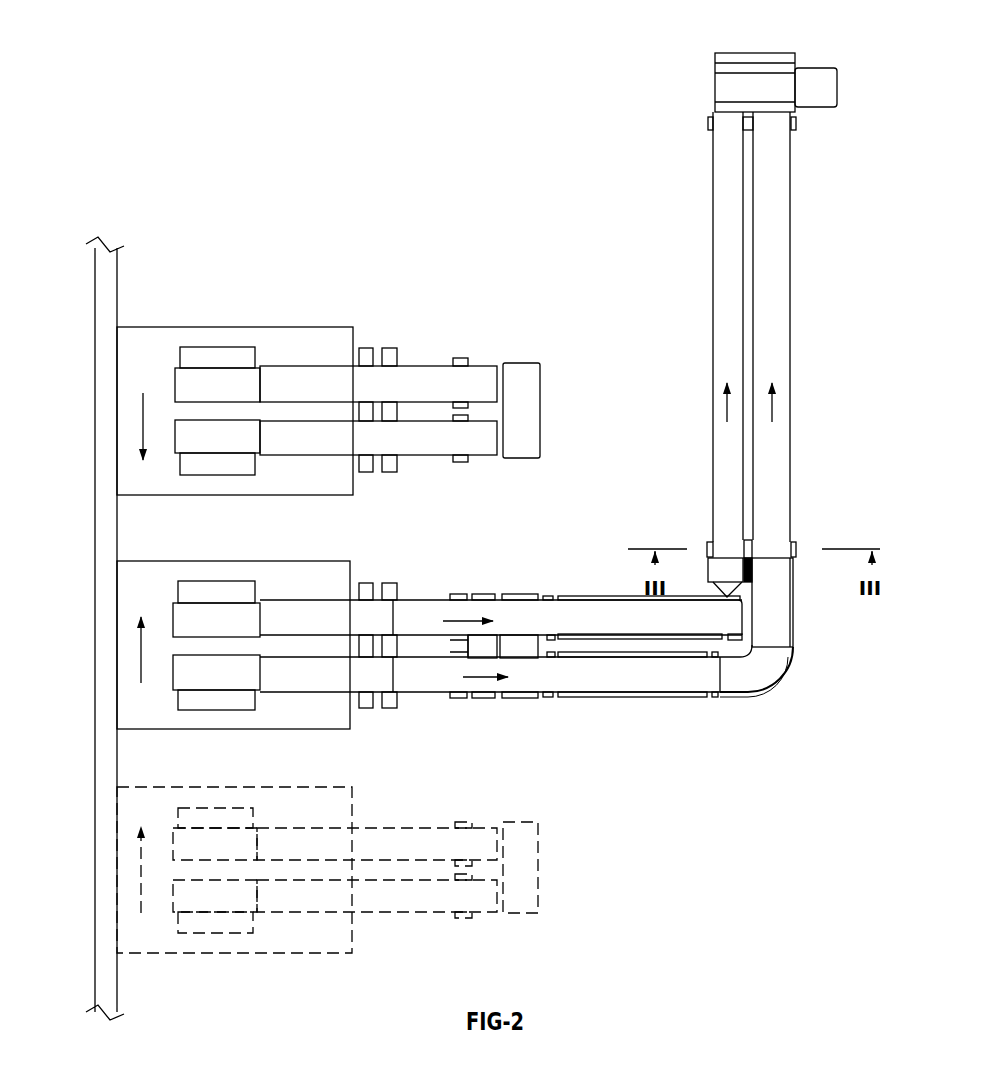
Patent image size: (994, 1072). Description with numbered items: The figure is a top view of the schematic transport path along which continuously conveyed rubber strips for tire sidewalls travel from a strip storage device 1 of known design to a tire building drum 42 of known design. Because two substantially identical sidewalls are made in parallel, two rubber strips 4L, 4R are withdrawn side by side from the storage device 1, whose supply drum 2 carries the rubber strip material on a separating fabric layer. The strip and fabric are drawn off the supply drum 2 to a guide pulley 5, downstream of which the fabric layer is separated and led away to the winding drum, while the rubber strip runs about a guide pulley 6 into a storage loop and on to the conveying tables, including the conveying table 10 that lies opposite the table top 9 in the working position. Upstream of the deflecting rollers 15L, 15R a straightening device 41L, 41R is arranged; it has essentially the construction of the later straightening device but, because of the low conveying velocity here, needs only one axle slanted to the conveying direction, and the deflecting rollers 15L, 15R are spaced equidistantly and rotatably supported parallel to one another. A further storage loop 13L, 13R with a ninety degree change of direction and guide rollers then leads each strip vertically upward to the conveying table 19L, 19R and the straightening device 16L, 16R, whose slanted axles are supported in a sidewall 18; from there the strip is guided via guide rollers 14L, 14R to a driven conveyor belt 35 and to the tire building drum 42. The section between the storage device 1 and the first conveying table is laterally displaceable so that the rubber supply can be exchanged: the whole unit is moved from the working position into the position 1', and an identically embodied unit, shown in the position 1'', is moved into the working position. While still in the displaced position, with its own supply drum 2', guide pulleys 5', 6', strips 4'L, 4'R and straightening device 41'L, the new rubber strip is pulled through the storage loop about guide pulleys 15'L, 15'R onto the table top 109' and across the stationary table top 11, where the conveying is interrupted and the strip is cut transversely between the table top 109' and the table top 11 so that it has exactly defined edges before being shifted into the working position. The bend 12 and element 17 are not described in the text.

The storage device 1 is at (193, 645).
The storage device position 1' is at (193, 406).
The storage device position 1'' is at (284, 870).
The supply drum 2 is at (216, 681).
The supply drum 2' is at (217, 365).
The rubber strip 4L is at (326, 617).
The rubber strip 4R is at (415, 680).
The rubber strip 4'L is at (378, 348).
The rubber strip 4'R is at (378, 466).
The straightening device 41L is at (413, 610).
The straightening device 41'L is at (436, 564).
The straightening device 41R is at (440, 675).
The guide pulley 5 is at (365, 684).
The guide pulley 5' is at (359, 360).
The guide pulley 6 is at (396, 692).
The guide pulley 6' is at (392, 368).
The table top 9 is at (508, 588).
The conveying table 10 is at (525, 597).
The stationary table top 11 is at (527, 397).
The bend 12 is at (792, 687).
The storage loop 13L is at (726, 598).
The storage loop 13R is at (742, 690).
The guide roller 14L is at (722, 548).
The guide roller 14R is at (773, 548).
The deflecting roller 15L is at (457, 595).
The deflecting roller 15R is at (455, 695).
The guide pulley 15'L is at (479, 316).
The guide pulley 15'R is at (491, 459).
The straightening device 16L is at (718, 572).
The straightening device 16R is at (795, 577).
The separator 17 is at (752, 578).
The sidewall 18 is at (793, 615).
The conveying table 19L is at (702, 550).
The conveying table 19R is at (802, 647).
The driven conveyor belt 35 is at (802, 337).
The tire building drum 42 is at (785, 72).
The table top 109' is at (517, 301).